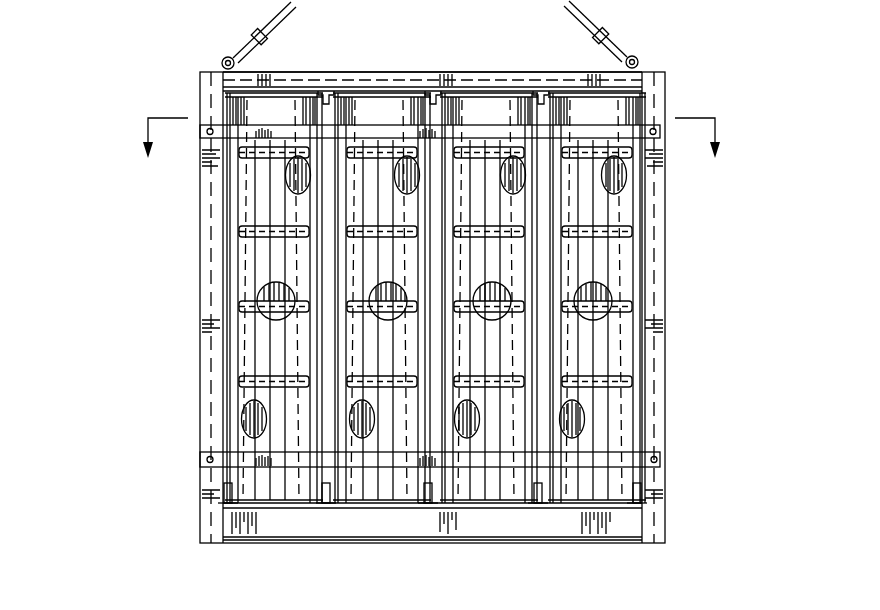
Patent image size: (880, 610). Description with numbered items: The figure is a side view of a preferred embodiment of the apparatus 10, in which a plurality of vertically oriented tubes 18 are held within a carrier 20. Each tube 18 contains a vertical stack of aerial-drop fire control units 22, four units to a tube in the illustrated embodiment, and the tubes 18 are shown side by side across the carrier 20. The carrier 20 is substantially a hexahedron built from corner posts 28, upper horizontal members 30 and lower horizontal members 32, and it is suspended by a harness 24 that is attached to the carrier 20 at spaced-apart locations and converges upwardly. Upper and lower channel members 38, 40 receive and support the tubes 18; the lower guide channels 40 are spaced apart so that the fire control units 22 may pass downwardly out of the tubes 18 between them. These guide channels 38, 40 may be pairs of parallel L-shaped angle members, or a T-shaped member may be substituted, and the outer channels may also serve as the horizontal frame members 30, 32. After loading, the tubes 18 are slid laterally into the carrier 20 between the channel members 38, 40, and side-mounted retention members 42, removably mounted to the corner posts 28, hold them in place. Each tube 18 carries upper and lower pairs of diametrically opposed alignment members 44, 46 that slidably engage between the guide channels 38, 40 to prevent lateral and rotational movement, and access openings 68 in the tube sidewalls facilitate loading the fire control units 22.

The apparatus 10 is at (168, 340).
The tube 18 is at (277, 108).
The carrier 20 is at (668, 304).
The aerial-drop fire control unit 22 is at (262, 260).
The harness 24 is at (262, 14).
The corner post 28 is at (212, 422).
The upper horizontal member 30 is at (265, 72).
The lower horizontal member 32 is at (572, 524).
The upper channel member 38 is at (333, 93).
The lower channel member 40 is at (324, 494).
The side-mounted retention member 42 is at (500, 132).
The upper alignment member 44 is at (452, 91).
The lower alignment member 46 is at (232, 494).
The access opening 68 is at (287, 177).